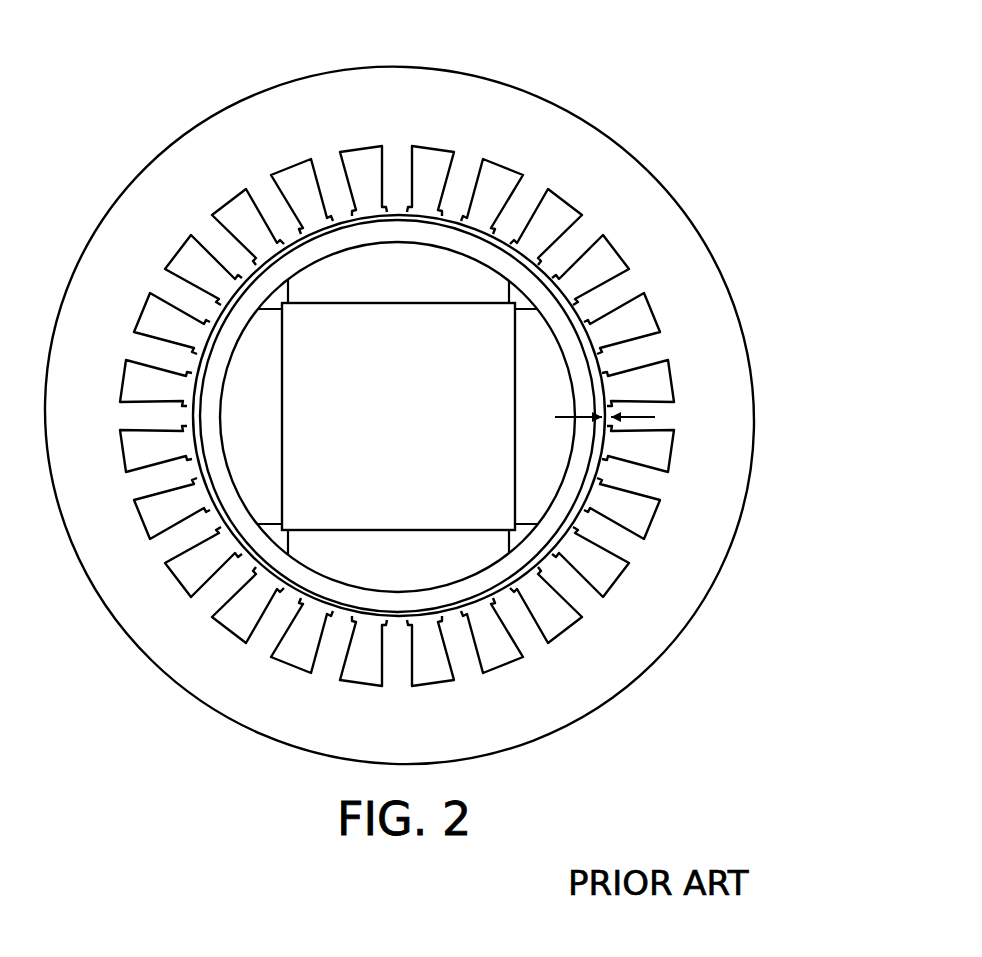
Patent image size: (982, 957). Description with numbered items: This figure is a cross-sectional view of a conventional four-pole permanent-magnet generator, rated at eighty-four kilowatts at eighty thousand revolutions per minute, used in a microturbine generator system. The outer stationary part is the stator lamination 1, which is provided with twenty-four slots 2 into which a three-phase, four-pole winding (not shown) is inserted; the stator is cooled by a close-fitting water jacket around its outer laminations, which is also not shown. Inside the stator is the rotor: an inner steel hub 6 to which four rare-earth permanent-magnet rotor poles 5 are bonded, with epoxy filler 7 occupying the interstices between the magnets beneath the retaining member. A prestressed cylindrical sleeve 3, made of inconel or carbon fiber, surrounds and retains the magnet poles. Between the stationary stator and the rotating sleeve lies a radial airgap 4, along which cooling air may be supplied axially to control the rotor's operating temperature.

The stator lamination 1 is at (397, 68).
The slots 2 is at (552, 210).
The prestressed cylindrical sleeve 3 is at (563, 313).
The radial airgap 4 is at (603, 413).
The rare-earth permanent-magnet rotor poles 5 is at (267, 503).
The inner steel hub 6 is at (398, 316).
The epoxy filler 7 is at (518, 537).